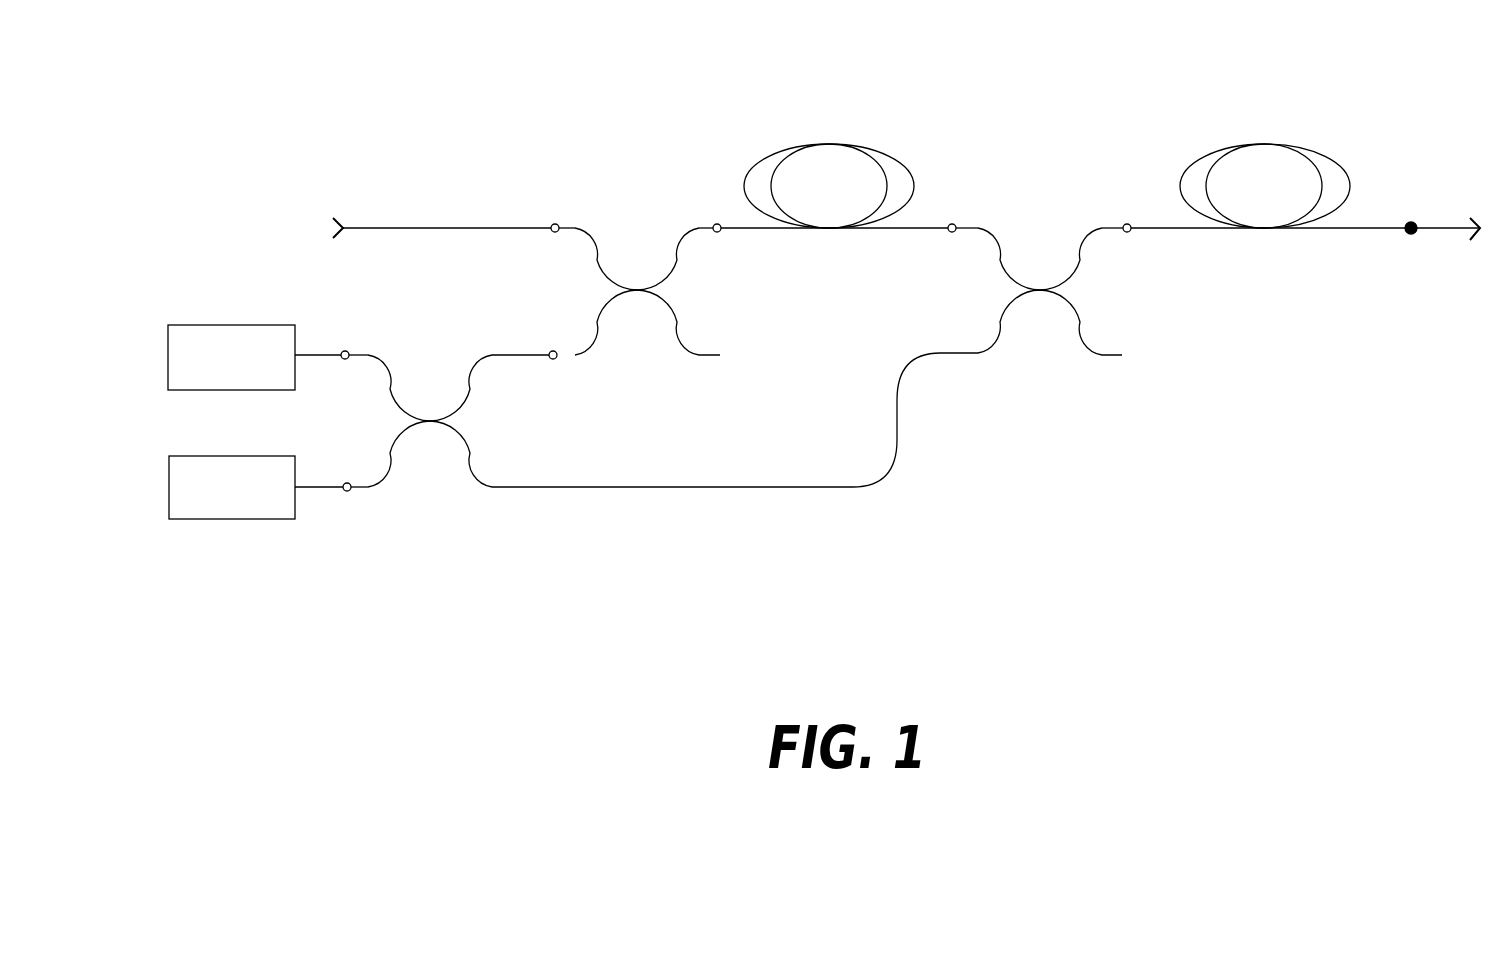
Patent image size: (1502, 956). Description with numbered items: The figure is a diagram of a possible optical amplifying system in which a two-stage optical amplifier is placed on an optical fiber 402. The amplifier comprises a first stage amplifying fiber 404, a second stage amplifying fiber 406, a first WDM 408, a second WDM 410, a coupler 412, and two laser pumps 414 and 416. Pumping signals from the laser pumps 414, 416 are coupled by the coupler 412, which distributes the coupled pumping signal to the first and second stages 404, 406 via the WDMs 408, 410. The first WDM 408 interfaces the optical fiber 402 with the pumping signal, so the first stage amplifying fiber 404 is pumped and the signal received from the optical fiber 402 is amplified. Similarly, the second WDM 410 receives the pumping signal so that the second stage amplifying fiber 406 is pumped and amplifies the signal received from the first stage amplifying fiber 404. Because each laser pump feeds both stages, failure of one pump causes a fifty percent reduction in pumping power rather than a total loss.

The optical fiber 402 is at (431, 228).
The first stage amplifying fiber 404 is at (826, 144).
The second stage amplifying fiber 406 is at (1263, 145).
The first WDM 408 is at (633, 278).
The second WDM 410 is at (1037, 278).
The coupler 412 is at (425, 410).
The laser pump 414 is at (228, 335).
The laser pump 416 is at (232, 515).